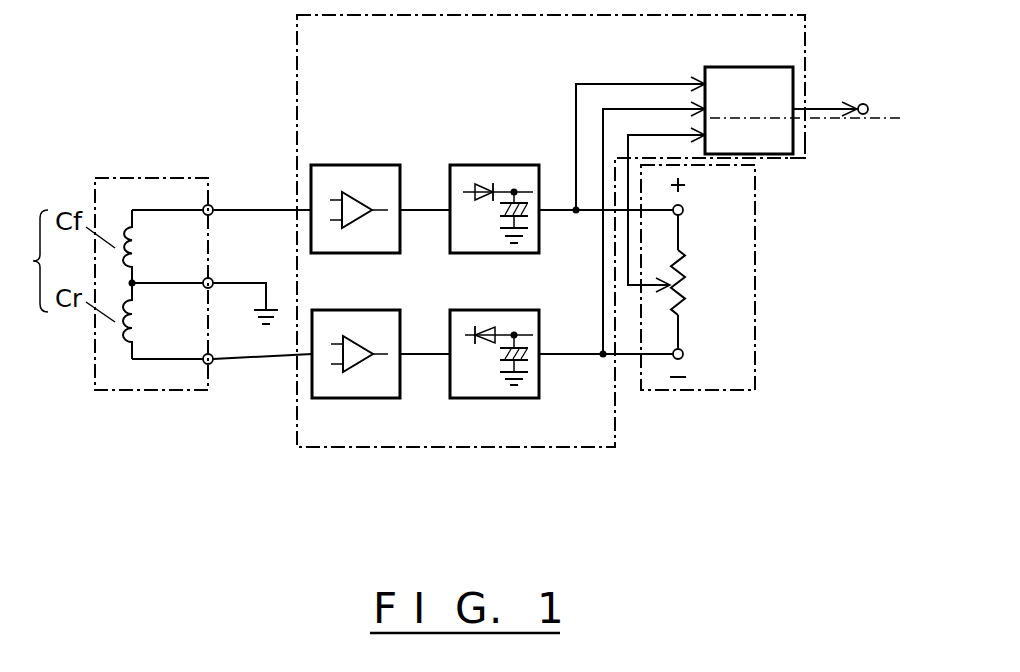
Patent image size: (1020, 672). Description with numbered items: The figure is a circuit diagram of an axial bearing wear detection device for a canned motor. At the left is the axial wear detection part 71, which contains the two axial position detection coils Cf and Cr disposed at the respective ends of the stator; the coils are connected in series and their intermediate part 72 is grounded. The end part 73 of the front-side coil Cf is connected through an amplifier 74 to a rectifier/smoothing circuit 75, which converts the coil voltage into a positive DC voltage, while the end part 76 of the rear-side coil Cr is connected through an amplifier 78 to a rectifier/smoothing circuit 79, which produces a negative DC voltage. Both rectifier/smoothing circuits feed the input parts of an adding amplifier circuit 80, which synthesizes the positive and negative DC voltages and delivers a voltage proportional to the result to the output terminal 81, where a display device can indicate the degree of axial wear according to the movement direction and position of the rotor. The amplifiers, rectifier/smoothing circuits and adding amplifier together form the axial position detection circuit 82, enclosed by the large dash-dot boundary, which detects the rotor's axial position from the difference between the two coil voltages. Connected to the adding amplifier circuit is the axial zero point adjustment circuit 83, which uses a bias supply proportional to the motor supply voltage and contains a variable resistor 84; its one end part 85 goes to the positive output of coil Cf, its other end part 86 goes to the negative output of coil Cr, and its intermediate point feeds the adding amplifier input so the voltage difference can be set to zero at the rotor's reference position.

The axial wear detection part 71 is at (158, 177).
The intermediate part 72 is at (212, 279).
The end part 73 is at (212, 206).
The amplifier 74 is at (357, 165).
The rectifier/smoothing circuit 75 is at (497, 165).
The end part 76 is at (212, 355).
The amplifier 78 is at (355, 398).
The rectifier/smoothing circuit 79 is at (495, 398).
The adding amplifier circuit 80 is at (748, 67).
The output terminal 81 is at (863, 103).
The axial position detection circuit 82 is at (807, 148).
The axial zero point adjustment circuit 83 is at (756, 240).
The variable resistor 84 is at (688, 291).
The end part 85 is at (684, 208).
The end part 86 is at (684, 352).